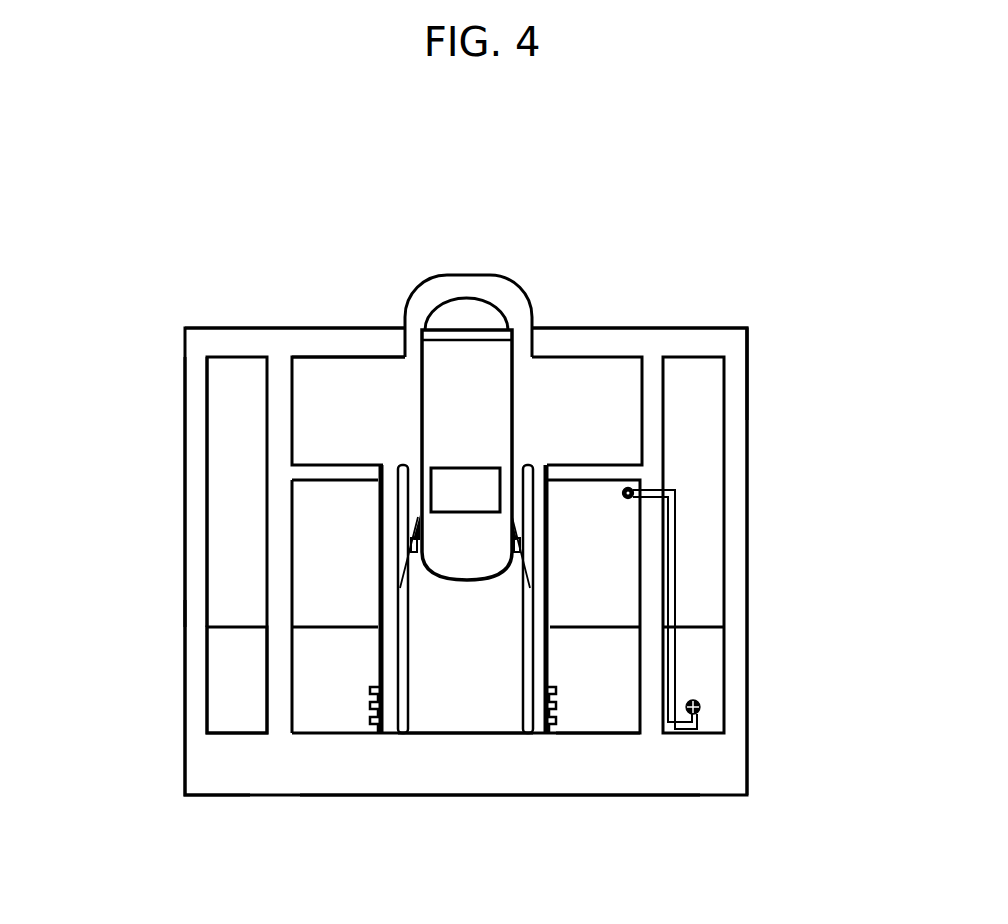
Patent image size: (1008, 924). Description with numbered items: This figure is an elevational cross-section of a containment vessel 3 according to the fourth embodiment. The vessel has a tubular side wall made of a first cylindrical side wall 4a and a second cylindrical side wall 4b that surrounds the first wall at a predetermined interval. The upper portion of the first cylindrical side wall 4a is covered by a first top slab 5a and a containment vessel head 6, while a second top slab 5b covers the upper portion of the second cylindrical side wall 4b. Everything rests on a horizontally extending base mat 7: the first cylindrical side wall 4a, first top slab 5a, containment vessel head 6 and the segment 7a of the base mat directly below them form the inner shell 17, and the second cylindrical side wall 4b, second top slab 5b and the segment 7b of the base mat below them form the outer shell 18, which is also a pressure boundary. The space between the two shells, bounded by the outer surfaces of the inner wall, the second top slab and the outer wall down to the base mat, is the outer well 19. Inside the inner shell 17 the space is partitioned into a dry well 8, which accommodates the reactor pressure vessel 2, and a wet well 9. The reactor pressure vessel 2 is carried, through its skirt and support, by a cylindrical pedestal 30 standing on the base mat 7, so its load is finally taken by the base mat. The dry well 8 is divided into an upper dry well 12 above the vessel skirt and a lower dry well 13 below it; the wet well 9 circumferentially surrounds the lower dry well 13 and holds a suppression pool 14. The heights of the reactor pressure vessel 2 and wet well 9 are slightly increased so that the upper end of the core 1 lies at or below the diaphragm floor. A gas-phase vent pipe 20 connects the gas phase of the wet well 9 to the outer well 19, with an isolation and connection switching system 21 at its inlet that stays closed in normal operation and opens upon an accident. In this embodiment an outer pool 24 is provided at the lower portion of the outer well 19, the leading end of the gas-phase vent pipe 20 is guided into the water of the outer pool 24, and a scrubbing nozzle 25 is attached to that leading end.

The core 1 is at (465, 487).
The reactor pressure vessel 2 is at (445, 425).
The holder 3 is at (295, 266).
The first cylindrical side wall 4a is at (280, 413).
The second cylindrical side wall 4b is at (200, 474).
The first top slab 5a is at (328, 340).
The second top slab 5b is at (236, 340).
The containment vessel head 6 is at (485, 272).
The base mat 7 is at (656, 821).
The segment of base mat 7a is at (520, 785).
The segment of base mat 7b is at (220, 785).
The dry well 8 is at (626, 391).
The wet well 9 is at (337, 538).
The upper dry well 12 is at (617, 440).
The lower dry well 13 is at (448, 690).
The suppression pool 14 is at (323, 705).
The inner shell 17 is at (589, 316).
The outer shell 18 is at (705, 316).
The outer well 19 is at (693, 567).
The gas-phase vent pipe 20 is at (653, 498).
The isolation and connection switching system 21 is at (622, 491).
The outer pool 24 is at (215, 648).
The scrubbing nozzle 25 is at (707, 707).
The pedestal 30 is at (527, 582).